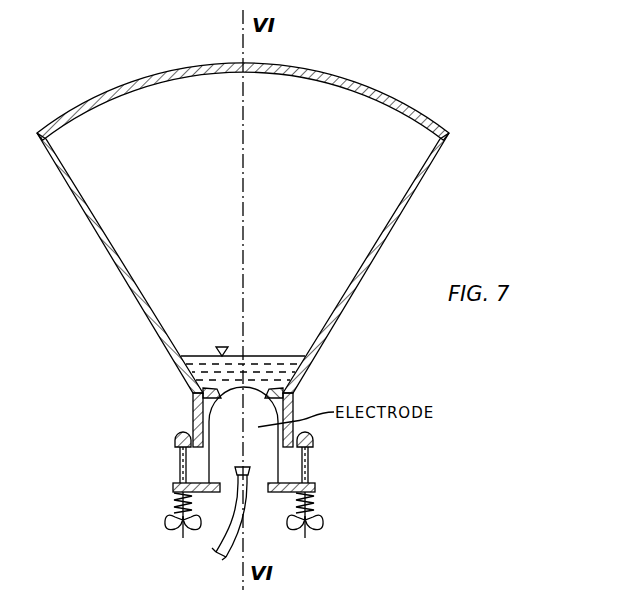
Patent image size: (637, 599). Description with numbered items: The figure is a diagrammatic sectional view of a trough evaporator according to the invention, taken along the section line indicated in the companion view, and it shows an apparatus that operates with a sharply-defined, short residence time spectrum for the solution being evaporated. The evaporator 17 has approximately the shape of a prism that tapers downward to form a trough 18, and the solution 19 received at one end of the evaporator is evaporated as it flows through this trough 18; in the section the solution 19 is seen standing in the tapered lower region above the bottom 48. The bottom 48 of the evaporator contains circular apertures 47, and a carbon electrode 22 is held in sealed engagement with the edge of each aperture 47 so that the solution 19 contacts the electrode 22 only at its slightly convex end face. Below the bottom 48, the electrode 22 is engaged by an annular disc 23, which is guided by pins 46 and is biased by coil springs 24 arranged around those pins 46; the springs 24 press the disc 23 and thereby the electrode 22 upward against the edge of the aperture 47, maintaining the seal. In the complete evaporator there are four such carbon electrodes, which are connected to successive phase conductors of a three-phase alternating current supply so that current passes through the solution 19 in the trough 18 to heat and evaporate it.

The evaporator 17 is at (170, 71).
The trough 18 is at (186, 373).
The solution 19 is at (206, 361).
The carbon electrode 22 is at (193, 424).
The annular disc 23 is at (216, 492).
The coil spring 24 is at (172, 505).
The pin 46 is at (309, 464).
The circular aperture 47 is at (289, 377).
The bottom 48 is at (202, 396).